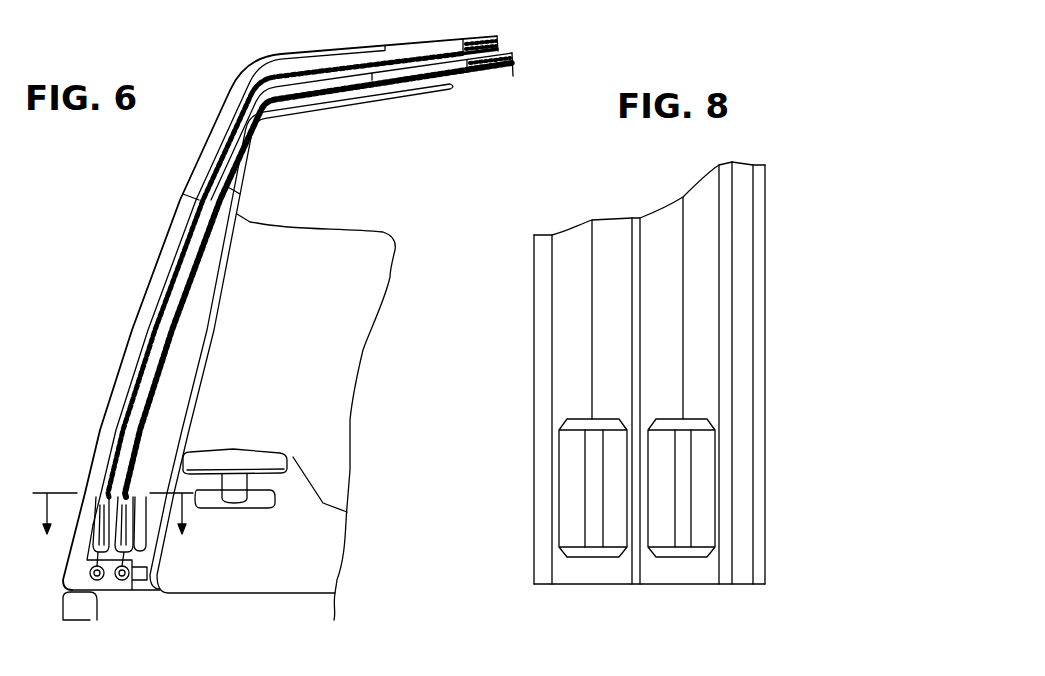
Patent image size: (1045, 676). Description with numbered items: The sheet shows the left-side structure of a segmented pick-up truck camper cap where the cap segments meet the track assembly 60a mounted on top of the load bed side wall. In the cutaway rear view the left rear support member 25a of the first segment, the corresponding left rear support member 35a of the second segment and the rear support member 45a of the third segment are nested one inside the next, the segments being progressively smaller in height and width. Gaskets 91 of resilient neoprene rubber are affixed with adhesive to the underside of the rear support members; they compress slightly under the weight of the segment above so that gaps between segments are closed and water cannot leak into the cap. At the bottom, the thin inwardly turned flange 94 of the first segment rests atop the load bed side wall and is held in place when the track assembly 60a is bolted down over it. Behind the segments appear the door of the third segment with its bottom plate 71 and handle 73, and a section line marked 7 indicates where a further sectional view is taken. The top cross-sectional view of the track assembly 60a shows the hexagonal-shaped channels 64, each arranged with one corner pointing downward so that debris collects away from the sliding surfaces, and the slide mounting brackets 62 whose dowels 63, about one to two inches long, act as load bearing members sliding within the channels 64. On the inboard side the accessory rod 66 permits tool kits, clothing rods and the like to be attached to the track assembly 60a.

In FIG. 6, the left rear support member 25a is at (163, 258).
In FIG. 6, the left rear support member of second segment 35a is at (160, 333).
In FIG. 6, the rear support member of third segment 45a is at (165, 400).
In FIG. 6, the gasket 91 is at (236, 108).
In FIG. 6, the track assembly 60a is at (125, 591).
In FIG. 8, the track assembly 60a is at (545, 552).
In FIG. 6, the inwardly turned flange 94 is at (97, 600).
In FIG. 6, the bottom plate 71 is at (320, 553).
In FIG. 6, the handle 73 is at (255, 460).
In FIG. 6, the section line 7 is at (113, 528).
In FIG. 8, the hexagonal-shaped channel 64 is at (570, 327).
In FIG. 8, the accessory rod 66 is at (761, 384).
In FIG. 8, the slide mounting bracket 62 is at (593, 463).
In FIG. 8, the dowel 63 is at (570, 496).